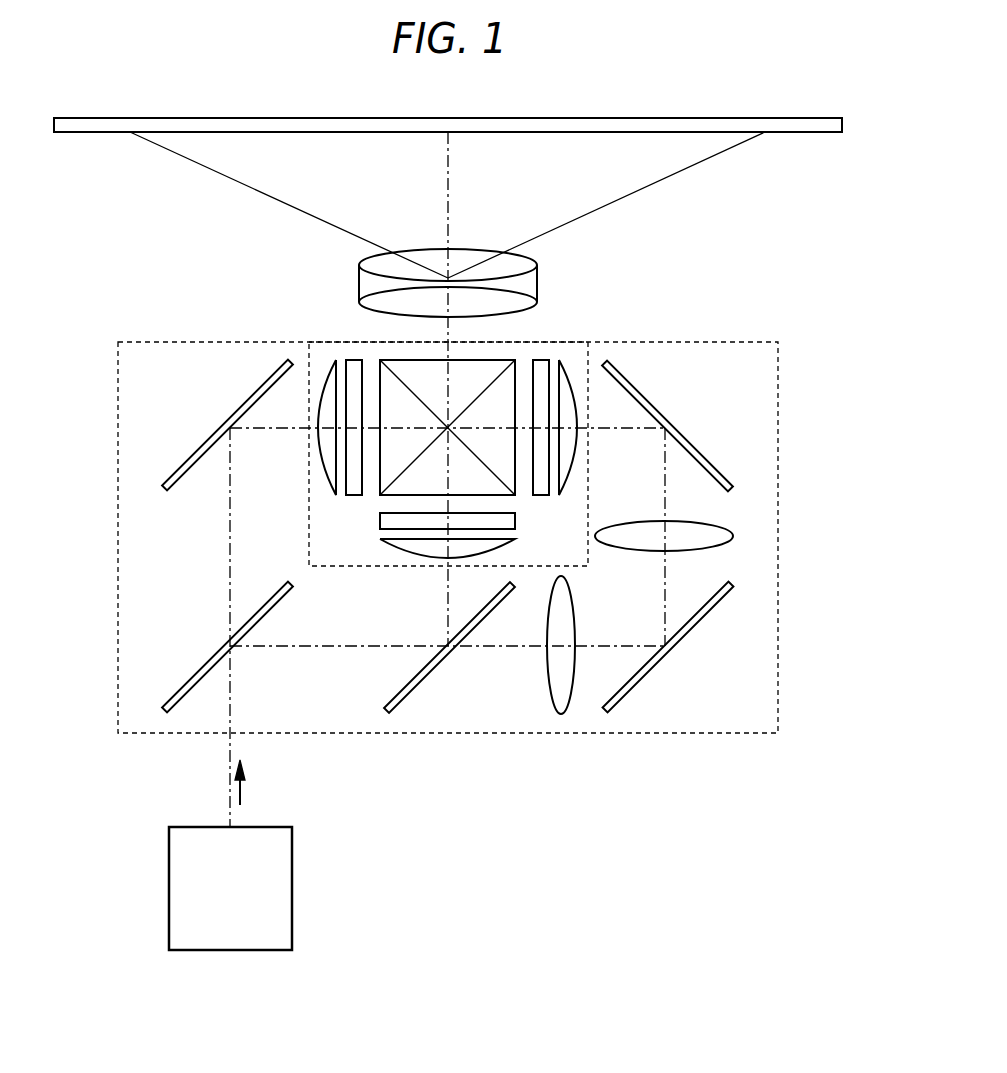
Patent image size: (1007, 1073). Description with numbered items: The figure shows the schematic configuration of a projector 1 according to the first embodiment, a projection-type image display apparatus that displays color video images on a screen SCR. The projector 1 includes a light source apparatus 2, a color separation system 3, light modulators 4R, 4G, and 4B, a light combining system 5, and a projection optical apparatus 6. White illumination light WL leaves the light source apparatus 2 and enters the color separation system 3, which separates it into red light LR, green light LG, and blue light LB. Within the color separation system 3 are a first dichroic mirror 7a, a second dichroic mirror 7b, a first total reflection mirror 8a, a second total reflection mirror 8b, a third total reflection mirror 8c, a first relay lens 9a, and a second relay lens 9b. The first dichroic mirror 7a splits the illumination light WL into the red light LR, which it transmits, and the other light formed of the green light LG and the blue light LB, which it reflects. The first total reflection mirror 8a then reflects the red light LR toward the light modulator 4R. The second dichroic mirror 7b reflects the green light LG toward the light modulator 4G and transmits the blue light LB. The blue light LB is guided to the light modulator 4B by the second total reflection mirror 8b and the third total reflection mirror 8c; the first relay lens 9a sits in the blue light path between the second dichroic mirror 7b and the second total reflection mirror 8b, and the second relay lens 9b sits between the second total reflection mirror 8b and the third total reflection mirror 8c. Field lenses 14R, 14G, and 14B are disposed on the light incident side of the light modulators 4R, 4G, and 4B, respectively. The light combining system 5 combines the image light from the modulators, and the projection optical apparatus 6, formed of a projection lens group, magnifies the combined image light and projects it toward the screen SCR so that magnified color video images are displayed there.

The projector 1 is at (787, 315).
The light source apparatus 2 is at (292, 890).
The color separation system 3 is at (118, 481).
The light modulator 4R is at (354, 358).
The light modulator 4G is at (385, 519).
The light modulator 4B is at (540, 358).
The light combining system 5 is at (472, 372).
The projection optical apparatus 6 is at (428, 258).
The first dichroic mirror 7a is at (195, 678).
The second dichroic mirror 7b is at (434, 672).
The first total reflection mirror 8a is at (205, 441).
The second total reflection mirror 8b is at (692, 628).
The third total reflection mirror 8c is at (695, 445).
The first relay lens 9a is at (547, 656).
The second relay lens 9b is at (733, 535).
The field lens 14R is at (330, 360).
The field lens 14G is at (385, 550).
The field lens 14B is at (565, 360).
The screen SCR is at (810, 132).
The illumination light WL is at (243, 785).
The red light LR is at (230, 560).
The green light LG is at (448, 604).
The blue light LB is at (665, 594).